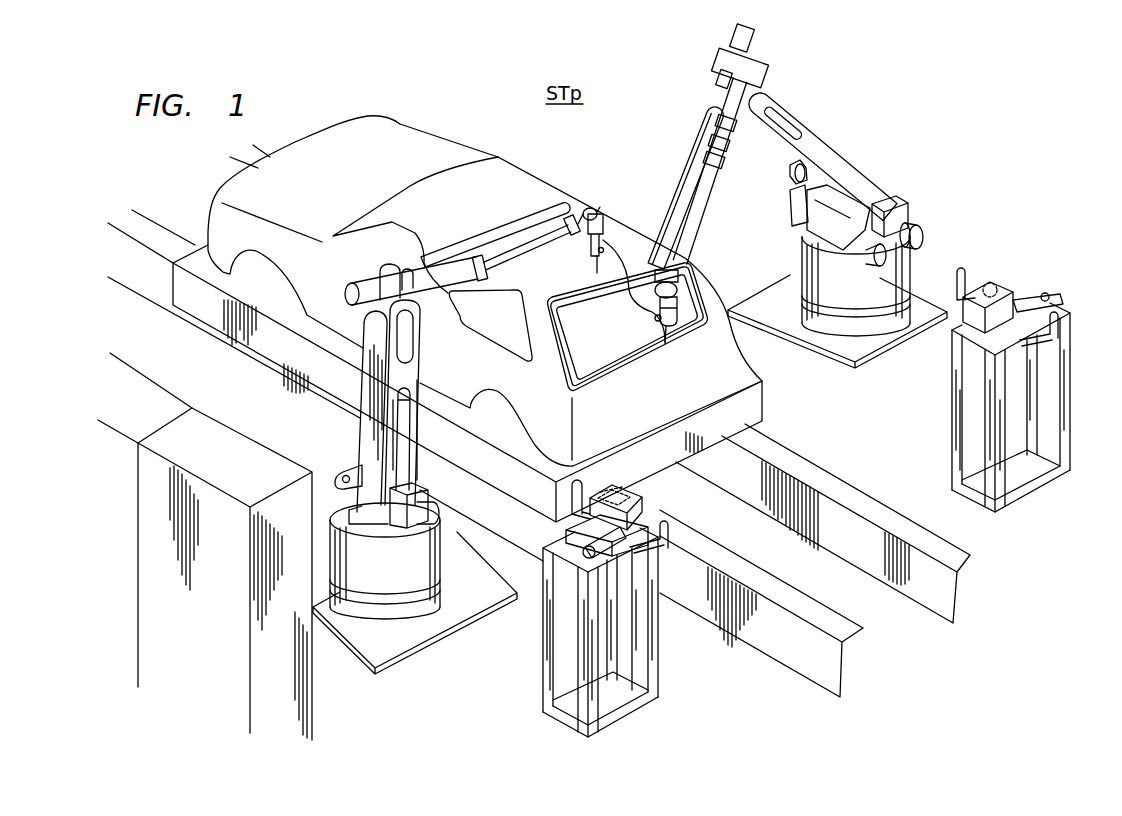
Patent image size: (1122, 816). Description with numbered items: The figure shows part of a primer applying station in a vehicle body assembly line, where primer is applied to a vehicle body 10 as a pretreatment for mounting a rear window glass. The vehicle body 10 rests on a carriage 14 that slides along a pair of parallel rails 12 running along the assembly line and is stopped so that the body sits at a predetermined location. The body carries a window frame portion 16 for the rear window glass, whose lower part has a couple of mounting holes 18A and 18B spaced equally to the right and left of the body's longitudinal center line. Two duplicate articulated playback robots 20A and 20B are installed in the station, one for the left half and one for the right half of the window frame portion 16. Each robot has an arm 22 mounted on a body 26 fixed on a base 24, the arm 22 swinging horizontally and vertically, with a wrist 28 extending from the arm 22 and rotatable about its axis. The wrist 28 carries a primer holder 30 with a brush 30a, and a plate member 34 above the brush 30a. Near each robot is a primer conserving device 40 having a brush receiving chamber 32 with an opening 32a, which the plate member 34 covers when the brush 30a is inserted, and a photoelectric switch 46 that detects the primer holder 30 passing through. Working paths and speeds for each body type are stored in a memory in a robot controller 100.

The vehicle body 10 is at (517, 157).
The rails 12 is at (767, 642).
The carriage 14 is at (205, 252).
The window frame portion 16 is at (562, 383).
The mounting hole 18A is at (615, 373).
The mounting hole 18B is at (680, 338).
The robot 20A is at (357, 437).
The robot 20B is at (827, 135).
The arm 22 is at (533, 249).
The base 24 is at (393, 623).
The body 26 is at (433, 593).
The wrist 28 is at (601, 240).
The primer holder 30 is at (607, 238).
The brush 30a is at (597, 268).
The brush receiving chamber 32 is at (587, 523).
The opening 32a is at (630, 492).
The plate member 34 is at (632, 291).
The primer conserving device 40 is at (653, 520).
The photoelectric switch 46 is at (585, 478).
The robot controller 100 is at (150, 585).